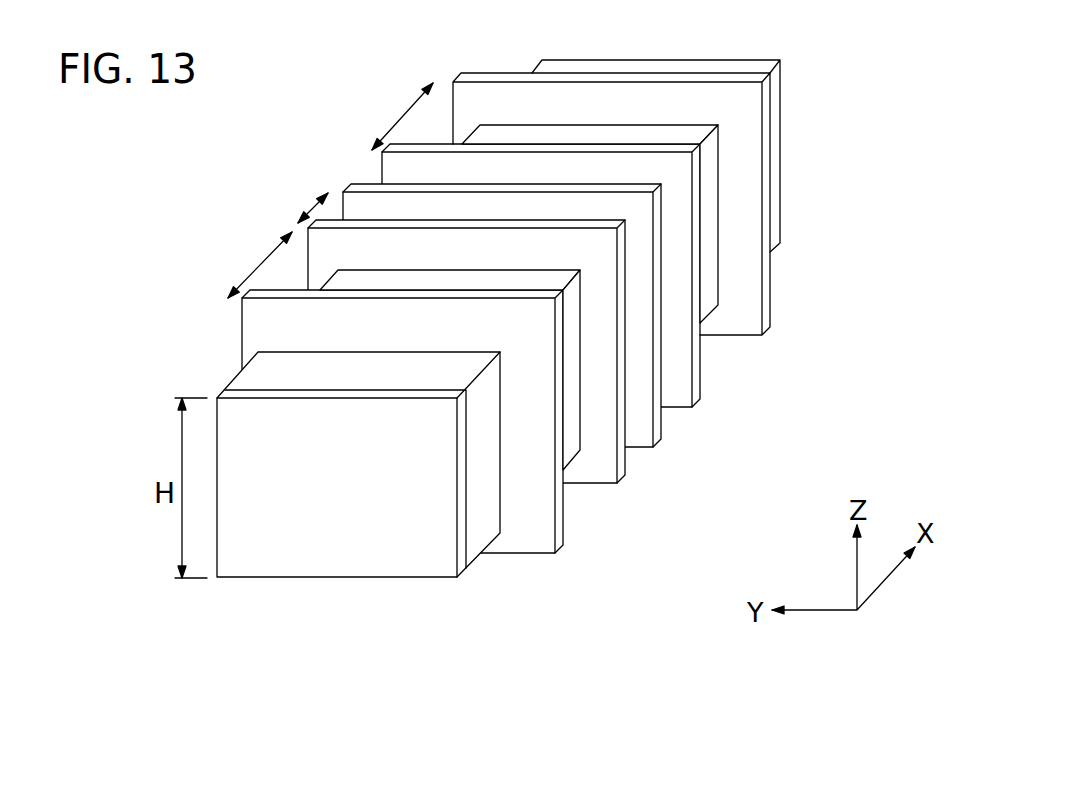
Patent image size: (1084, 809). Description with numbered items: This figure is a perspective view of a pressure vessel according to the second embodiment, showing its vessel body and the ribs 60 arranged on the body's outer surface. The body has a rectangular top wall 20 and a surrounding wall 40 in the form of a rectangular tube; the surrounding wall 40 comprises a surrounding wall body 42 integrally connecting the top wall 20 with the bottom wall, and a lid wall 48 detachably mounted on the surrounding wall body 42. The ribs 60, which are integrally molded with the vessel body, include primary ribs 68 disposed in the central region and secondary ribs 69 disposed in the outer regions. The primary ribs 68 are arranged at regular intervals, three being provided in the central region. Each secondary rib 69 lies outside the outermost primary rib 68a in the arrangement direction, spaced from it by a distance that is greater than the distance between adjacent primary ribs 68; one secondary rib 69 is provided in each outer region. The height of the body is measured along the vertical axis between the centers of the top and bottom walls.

The top wall 20 is at (541, 386).
The surrounding wall 40 is at (362, 532).
The surrounding wall body 42 is at (488, 550).
The lid wall 48 is at (415, 572).
The ribs 60 is at (591, 306).
The primary rib 68 is at (625, 483).
The outermost primary rib 68a is at (598, 270).
The secondary rib 69 is at (767, 333).